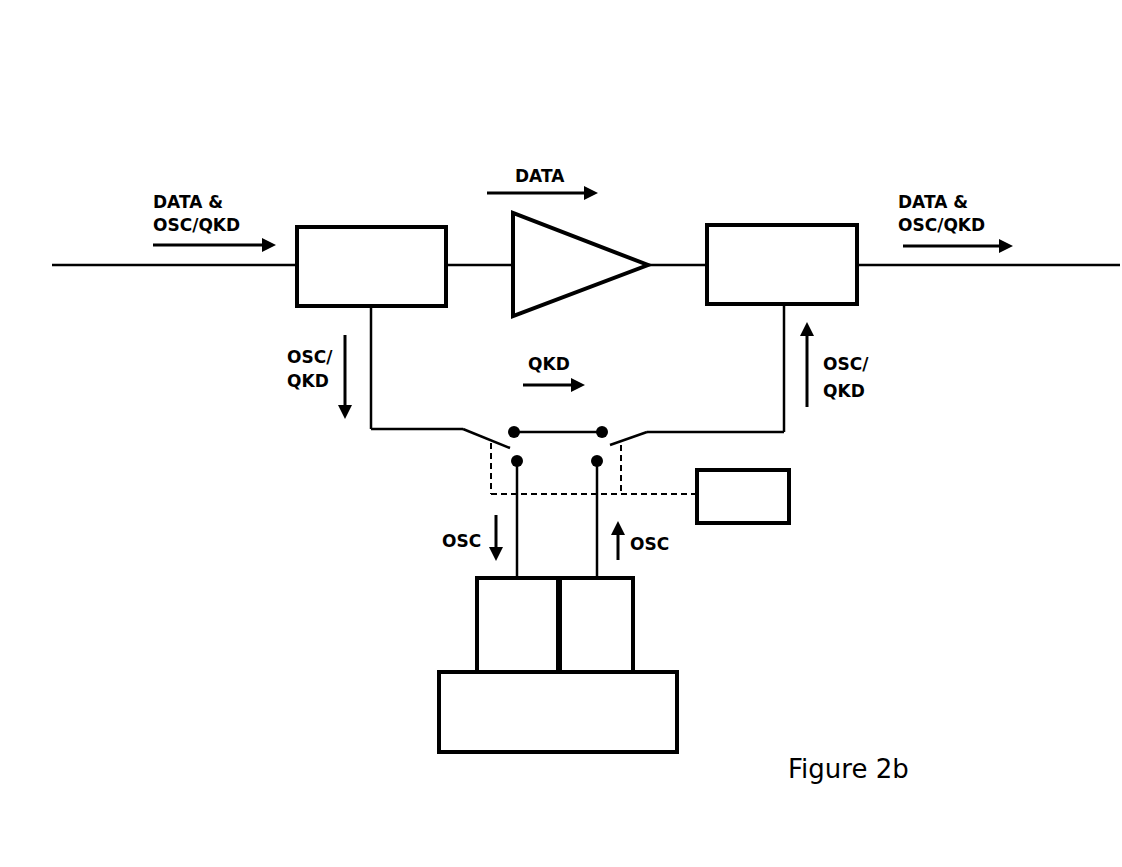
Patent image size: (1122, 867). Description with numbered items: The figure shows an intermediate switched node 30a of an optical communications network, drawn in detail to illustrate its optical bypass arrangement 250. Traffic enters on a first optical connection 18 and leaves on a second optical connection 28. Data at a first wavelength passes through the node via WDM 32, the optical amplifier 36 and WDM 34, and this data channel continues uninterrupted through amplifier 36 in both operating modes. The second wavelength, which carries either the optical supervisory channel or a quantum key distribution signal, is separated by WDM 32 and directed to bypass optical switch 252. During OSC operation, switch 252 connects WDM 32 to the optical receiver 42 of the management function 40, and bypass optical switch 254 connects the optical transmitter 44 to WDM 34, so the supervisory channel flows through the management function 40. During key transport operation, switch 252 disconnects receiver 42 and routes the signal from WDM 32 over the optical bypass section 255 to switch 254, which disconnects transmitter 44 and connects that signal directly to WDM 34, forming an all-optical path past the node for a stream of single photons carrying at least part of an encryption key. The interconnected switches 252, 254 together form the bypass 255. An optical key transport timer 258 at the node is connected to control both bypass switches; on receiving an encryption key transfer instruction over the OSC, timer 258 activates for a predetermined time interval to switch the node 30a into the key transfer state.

The intermediate switched node 30a is at (350, 80).
The first optical connection 18 is at (174, 278).
The second optical connection 28 is at (988, 283).
The WDM optical filter 32 is at (421, 280).
The WDM optical filter 34 is at (831, 279).
The optical amplifier 36 is at (538, 280).
The management function 40 is at (617, 735).
The optical receiver 42 is at (505, 650).
The optical transmitter 44 is at (584, 650).
The optical bypass arrangement 250 is at (512, 460).
The bypass optical switch 252 is at (490, 423).
The bypass optical switch 254 is at (626, 422).
The optical bypass section 255 is at (558, 419).
The optical key transport timer 258 is at (743, 513).